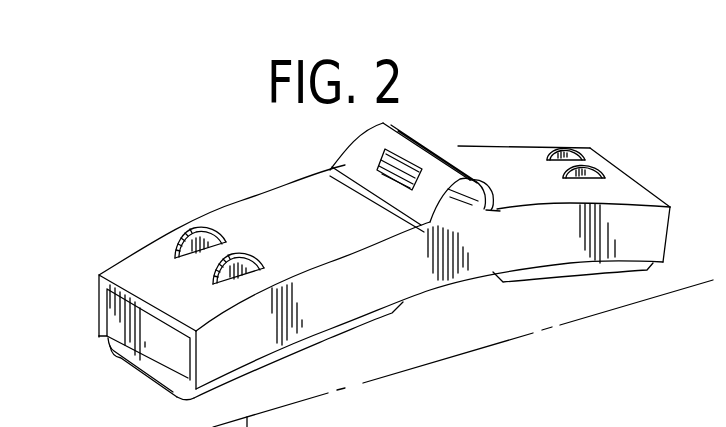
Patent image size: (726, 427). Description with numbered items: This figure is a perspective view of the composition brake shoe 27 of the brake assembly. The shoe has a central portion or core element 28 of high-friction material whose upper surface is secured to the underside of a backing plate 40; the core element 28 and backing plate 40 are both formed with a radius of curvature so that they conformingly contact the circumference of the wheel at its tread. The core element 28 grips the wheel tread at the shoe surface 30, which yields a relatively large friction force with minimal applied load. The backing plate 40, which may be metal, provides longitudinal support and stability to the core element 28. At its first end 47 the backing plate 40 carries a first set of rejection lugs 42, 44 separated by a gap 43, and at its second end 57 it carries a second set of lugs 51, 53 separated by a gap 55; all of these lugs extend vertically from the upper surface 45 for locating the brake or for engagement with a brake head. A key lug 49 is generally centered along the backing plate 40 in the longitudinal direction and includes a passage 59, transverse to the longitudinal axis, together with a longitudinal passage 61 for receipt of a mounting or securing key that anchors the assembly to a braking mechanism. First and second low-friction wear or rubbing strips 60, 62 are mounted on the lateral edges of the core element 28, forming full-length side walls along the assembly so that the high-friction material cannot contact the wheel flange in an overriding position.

The brake shoe 27 is at (82, 321).
The core element 28 is at (122, 334).
The shoe surface 30 is at (147, 381).
The backing plate 40 is at (314, 208).
The rejection lug 42 is at (229, 229).
The gap 43 is at (204, 264).
The rejection lug 44 is at (259, 253).
The upper surface 45 is at (636, 192).
The first end 47 is at (97, 276).
The key lug 49 is at (392, 124).
The lug 51 is at (547, 157).
The lug 53 is at (575, 182).
The gap 55 is at (556, 167).
The second end 57 is at (598, 150).
The passage 59 is at (457, 204).
The wear strip 60 is at (103, 305).
The longitudinal passage 61 is at (410, 180).
The wear strip 62 is at (186, 378).